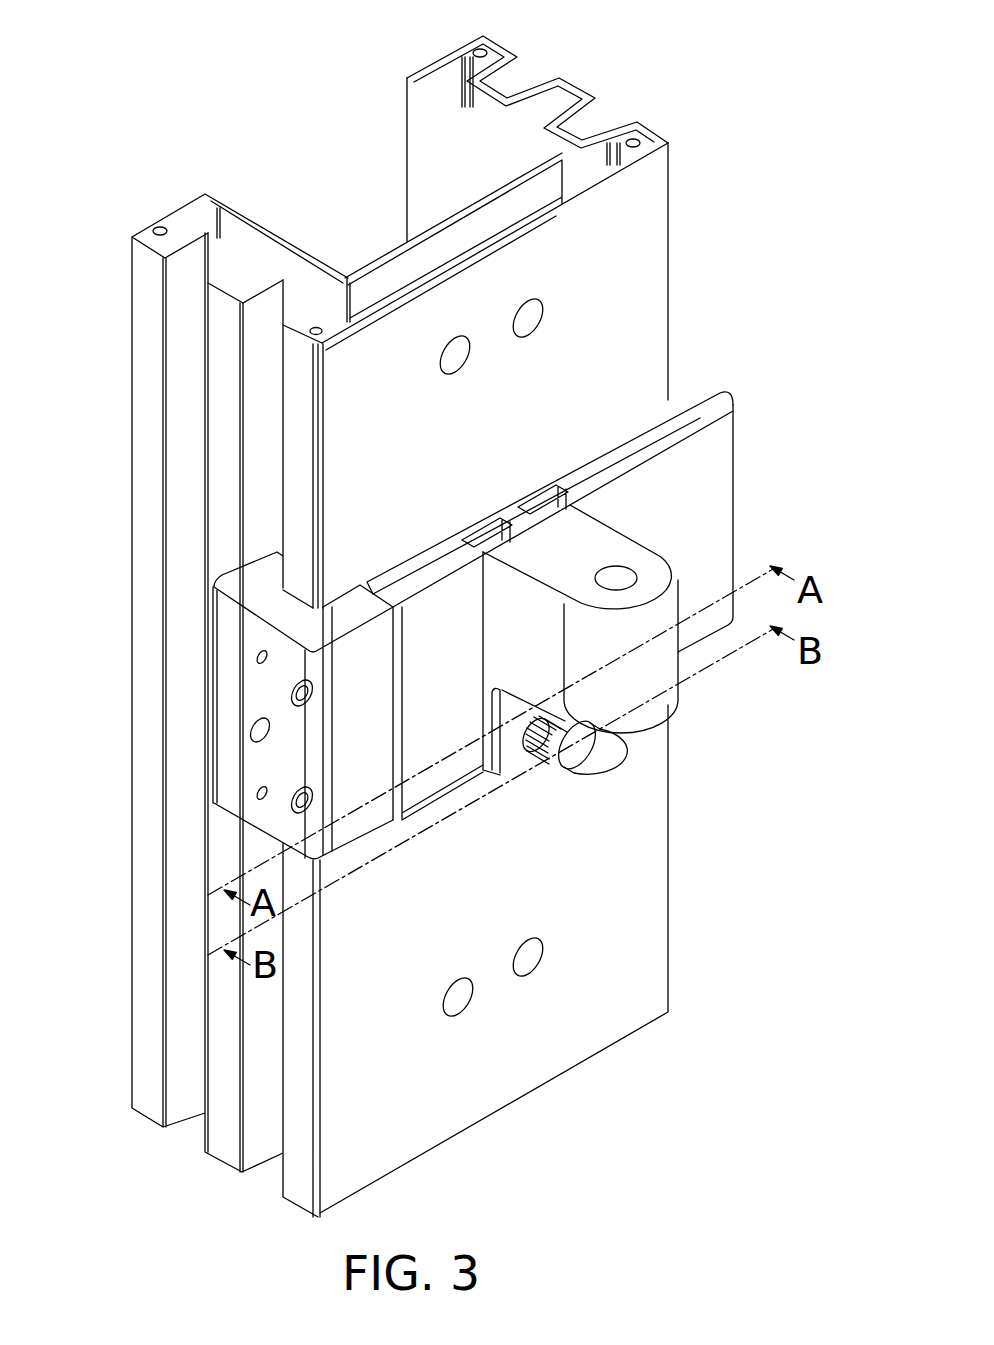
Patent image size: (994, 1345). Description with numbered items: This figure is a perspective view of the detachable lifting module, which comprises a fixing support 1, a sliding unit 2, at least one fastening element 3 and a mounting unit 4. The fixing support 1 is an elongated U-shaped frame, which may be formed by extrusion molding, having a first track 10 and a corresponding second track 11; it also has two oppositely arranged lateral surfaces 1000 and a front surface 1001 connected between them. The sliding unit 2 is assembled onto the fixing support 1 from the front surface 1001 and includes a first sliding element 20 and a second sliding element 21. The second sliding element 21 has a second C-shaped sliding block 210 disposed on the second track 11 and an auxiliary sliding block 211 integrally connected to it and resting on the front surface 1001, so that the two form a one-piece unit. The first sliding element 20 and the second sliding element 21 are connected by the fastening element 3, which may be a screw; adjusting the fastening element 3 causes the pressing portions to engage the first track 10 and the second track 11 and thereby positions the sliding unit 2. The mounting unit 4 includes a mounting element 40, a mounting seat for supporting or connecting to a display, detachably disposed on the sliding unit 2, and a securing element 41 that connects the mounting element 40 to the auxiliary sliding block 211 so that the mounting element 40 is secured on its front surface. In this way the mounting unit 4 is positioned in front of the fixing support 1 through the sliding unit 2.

The fixing support 1 is at (703, 45).
The first track 10 is at (283, 465).
The second track 11 is at (547, 624).
The lateral surfaces 1000 is at (668, 188).
The front surface 1001 is at (622, 263).
The sliding unit 2 is at (772, 277).
The first sliding element 20 is at (243, 665).
The second sliding element 21 is at (583, 549).
The second C-shaped sliding block 210 is at (679, 385).
The auxiliary sliding block 211 is at (680, 483).
The fastening element 3 is at (300, 693).
The mounting unit 4 is at (782, 680).
The mounting element 40 is at (657, 665).
The securing element 41 is at (580, 757).